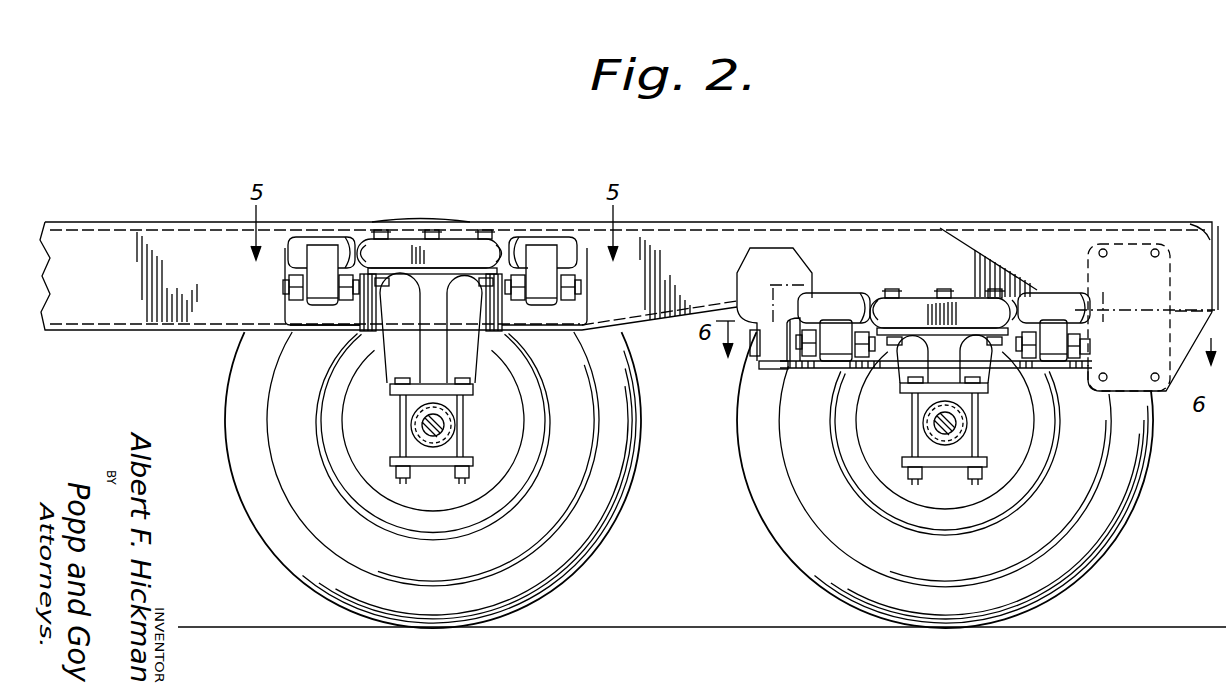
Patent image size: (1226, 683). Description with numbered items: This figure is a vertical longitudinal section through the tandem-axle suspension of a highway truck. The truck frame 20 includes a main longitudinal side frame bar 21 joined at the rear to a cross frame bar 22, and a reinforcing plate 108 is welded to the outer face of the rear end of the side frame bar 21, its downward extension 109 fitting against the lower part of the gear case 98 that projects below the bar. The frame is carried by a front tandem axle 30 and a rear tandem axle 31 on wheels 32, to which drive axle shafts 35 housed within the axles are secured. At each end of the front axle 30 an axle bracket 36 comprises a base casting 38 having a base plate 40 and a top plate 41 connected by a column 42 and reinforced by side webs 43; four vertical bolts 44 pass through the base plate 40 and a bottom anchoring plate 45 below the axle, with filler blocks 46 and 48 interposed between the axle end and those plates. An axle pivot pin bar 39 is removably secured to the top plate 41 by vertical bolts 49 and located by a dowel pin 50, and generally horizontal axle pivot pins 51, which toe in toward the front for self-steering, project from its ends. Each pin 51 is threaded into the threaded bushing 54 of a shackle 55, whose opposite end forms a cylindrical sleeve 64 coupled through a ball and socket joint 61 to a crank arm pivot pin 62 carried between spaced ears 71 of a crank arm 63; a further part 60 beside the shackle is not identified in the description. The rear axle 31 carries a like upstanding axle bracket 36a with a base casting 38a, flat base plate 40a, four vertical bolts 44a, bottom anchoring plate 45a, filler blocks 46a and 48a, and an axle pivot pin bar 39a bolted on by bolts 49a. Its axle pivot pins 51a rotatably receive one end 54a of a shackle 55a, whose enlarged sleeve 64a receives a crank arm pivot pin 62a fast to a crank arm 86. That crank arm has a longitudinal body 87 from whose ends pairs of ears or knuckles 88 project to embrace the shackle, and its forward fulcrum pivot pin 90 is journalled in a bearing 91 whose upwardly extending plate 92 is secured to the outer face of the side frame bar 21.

The frame 20 is at (113, 221).
The main longitudinal side frame bar 21 is at (137, 277).
The cross frame bar 22 is at (1076, 292).
The front tandem axle 30 is at (456, 430).
The rear tandem axle 31 is at (928, 445).
The wheels 32 is at (562, 590).
The drive axle shaft 35 is at (421, 425).
The axle bracket 36 is at (470, 246).
The base casting 38 is at (463, 312).
The axle pivot pin bar 39 is at (460, 240).
The base plate 40 is at (432, 388).
The top plate 41 is at (428, 254).
The column 42 is at (431, 340).
The side webs 43 is at (483, 374).
The vertical bolts 44 is at (460, 480).
The bottom anchoring plate 45 is at (471, 461).
The filler block 46 is at (458, 404).
The filler block 48 is at (412, 449).
The vertical bolts 49 is at (381, 232).
The locating dowel pin 50 is at (433, 232).
The axle pivot pin 51 is at (363, 250).
The threaded bushing 54 is at (325, 240).
The shackle 55 is at (310, 240).
The frame bracket 60 is at (284, 258).
The universal or ball and socket joint 61 is at (320, 308).
The crank arm pivot pin 62 is at (288, 286).
The crank arm 63 is at (289, 297).
The cylindrical sleeve 64 is at (321, 290).
The spaced ears 71 is at (533, 285).
The base casting 38a is at (929, 326).
The axle pivot pin bar 39a is at (985, 300).
The upstanding axle bracket 36a is at (957, 300).
The bolts 49a is at (896, 292).
The flat base plate 40a is at (988, 388).
The filler block 46a is at (969, 404).
The filler block 48a is at (924, 463).
The bottom anchoring plate 45a is at (944, 470).
The vertical bolts 44a is at (974, 481).
The shackle 55a is at (838, 293).
The shackle end 54a is at (862, 295).
The axle pivot pin 51a is at (880, 300).
The enlarged sleeve 64a is at (833, 352).
The crank arm pivot pin 62a is at (806, 357).
The crank arm 86 is at (1092, 366).
The body 87 is at (891, 370).
The vertical ears or knuckles 88 is at (832, 368).
The fulcrum pivot pin 90 is at (742, 352).
The bearing 91 is at (766, 371).
The upwardly extending plate 92 is at (774, 285).
The gear case 98 is at (1145, 317).
The reinforcing plate 108 is at (1112, 230).
The downward extension 109 is at (1166, 390).